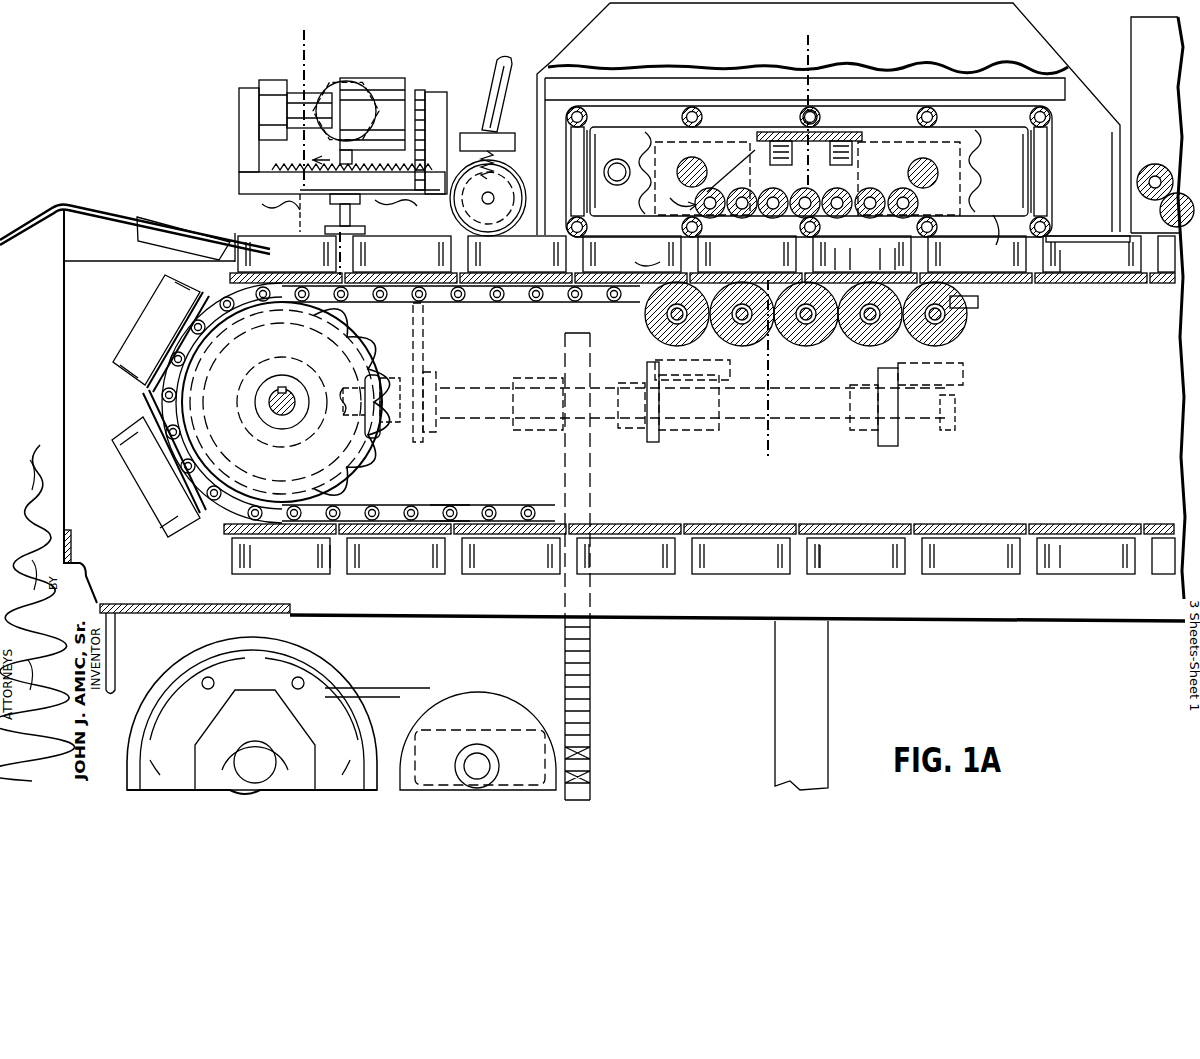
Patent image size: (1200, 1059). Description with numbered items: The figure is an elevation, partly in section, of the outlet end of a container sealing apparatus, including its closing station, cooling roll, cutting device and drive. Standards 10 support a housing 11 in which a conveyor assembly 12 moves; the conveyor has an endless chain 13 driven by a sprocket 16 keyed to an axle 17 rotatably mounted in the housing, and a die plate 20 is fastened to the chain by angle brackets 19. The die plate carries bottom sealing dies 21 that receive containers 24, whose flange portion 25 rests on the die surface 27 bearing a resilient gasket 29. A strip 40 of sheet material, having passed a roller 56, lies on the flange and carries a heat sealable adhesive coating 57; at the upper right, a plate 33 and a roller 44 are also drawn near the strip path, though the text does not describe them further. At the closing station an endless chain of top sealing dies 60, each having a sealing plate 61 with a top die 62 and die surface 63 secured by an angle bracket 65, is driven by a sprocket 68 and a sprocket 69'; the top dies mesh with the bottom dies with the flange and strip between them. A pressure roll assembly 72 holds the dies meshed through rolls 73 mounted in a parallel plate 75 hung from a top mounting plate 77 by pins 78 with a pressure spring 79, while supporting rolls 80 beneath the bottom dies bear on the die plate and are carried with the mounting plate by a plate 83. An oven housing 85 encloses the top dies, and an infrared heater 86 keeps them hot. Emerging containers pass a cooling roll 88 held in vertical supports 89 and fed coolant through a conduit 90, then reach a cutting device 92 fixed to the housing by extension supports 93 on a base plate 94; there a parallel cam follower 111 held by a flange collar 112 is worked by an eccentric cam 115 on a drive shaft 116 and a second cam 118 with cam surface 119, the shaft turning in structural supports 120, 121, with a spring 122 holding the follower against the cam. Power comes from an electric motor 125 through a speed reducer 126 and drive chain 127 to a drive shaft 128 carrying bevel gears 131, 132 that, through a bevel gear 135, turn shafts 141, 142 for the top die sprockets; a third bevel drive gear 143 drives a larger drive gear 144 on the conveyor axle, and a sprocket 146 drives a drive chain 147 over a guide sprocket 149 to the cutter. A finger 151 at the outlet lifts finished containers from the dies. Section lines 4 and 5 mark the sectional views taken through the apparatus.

The section line 4- 4 is at (822, 52).
The section line 5- 5 is at (290, 52).
The standards 10 is at (112, 648).
The housing 11 is at (275, 605).
The conveyor assembly 12 is at (479, 497).
The endless chain 13 is at (432, 510).
The sprocket 16 is at (362, 345).
The axle 17 is at (270, 405).
The angle brackets 19 is at (195, 345).
The die plate 20 is at (145, 392).
The bottom sealing dies 21 is at (125, 370).
The containers 24 is at (138, 240).
The flange portion 25 is at (130, 232).
The die surface 27 is at (986, 224).
The resilient gasket 29 is at (125, 345).
The side plate 33 is at (1135, 40).
The strip of sheet material 40 is at (1110, 240).
The roller 44 is at (1153, 170).
The roller 56 is at (1158, 172).
The coating of heat sealable adhesive 57 is at (1175, 228).
The top sealing dies 60 is at (569, 123).
The sealing plate 61 is at (584, 146).
The top die 62 is at (586, 170).
The die surface 63 is at (594, 200).
The angle bracket 65 is at (606, 172).
The sprocket 68 is at (643, 140).
The sprocket 69' is at (989, 171).
The pressure roll assembly 72 is at (675, 197).
The rolls 73 is at (755, 190).
The parallel plate 75 is at (742, 160).
The top mounting plate 77 is at (758, 132).
The pins 78 is at (842, 140).
The pressure spring 79 is at (800, 116).
The supporting rolls 80 is at (660, 310).
The plate 83 is at (638, 255).
The oven housing 85 is at (545, 55).
The infrared heater 86 is at (635, 82).
The cooling roll 88 is at (460, 222).
The vertical supports 89 is at (465, 150).
The conduit 90 is at (495, 74).
The cutting device 92 is at (232, 110).
The extension supports 93 is at (265, 216).
The base plate 94 is at (248, 183).
The parallel cam follower 111 is at (322, 127).
The flange collar 112 is at (352, 160).
The eccentric cam 115 is at (298, 102).
The drive shaft 116 is at (418, 98).
The second cam 118 is at (386, 82).
The cam surface 119 is at (335, 80).
The structural support 120 is at (245, 145).
The structural support 121 is at (436, 95).
The spring 122 is at (294, 165).
The electric motor 125 is at (310, 688).
The speed reducer 126 is at (512, 708).
The drive chain 127 is at (592, 698).
The drive shaft 128 is at (358, 430).
The bevel gear 131 is at (890, 440).
The bevel gear 132 is at (660, 440).
The bevel gear 135 is at (728, 378).
The shaft 141 is at (946, 187).
The shaft 142 is at (690, 166).
The third bevel drive gear 143 is at (395, 448).
The larger drive gear 144 is at (382, 475).
The sprocket 146 is at (438, 385).
The drive chain 147 is at (422, 88).
The guide sprocket 149 is at (408, 185).
The finger 151 is at (53, 206).